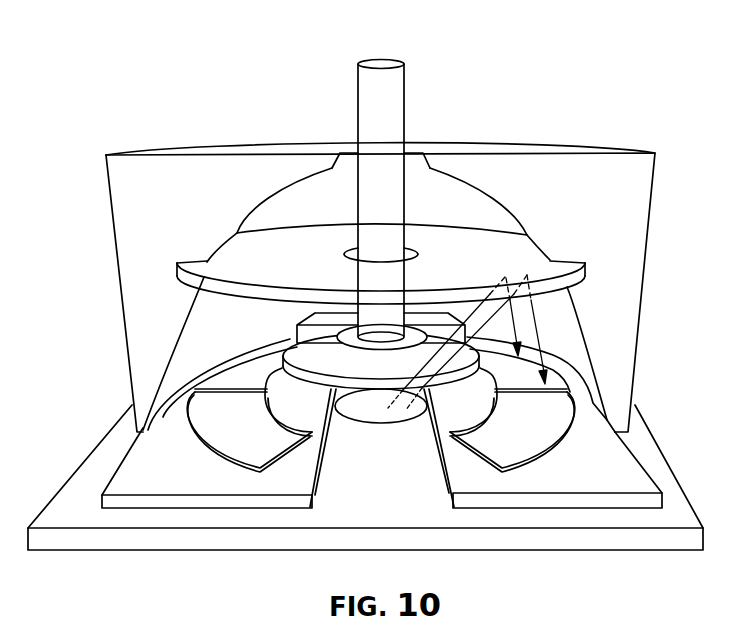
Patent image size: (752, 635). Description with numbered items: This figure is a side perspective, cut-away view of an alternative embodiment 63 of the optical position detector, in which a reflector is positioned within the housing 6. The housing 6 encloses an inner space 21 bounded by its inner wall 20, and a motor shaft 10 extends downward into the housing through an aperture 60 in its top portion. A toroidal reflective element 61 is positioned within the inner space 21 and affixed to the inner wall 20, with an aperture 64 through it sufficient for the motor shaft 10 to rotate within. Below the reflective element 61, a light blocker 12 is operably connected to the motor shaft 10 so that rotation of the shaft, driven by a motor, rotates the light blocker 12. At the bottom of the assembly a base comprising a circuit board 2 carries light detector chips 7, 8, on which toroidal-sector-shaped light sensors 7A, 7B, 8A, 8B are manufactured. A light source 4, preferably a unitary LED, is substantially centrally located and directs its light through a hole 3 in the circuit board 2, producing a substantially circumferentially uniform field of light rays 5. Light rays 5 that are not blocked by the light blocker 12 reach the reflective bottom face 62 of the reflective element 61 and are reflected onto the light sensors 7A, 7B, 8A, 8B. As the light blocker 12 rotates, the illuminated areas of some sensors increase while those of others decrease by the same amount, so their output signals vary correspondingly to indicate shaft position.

The alternative embodiment 63 is at (108, 86).
The circuit board 2 is at (65, 520).
The housing 6 is at (607, 197).
The light detector chip 8 is at (149, 482).
The light detector chip 7 is at (587, 480).
The light sensor 8A is at (238, 452).
The light sensor 8B is at (238, 387).
The light sensor 7A is at (505, 384).
The light sensor 7B is at (491, 449).
The inner space 21 is at (180, 359).
The inner wall 20 is at (284, 192).
The aperture 60 is at (413, 154).
The motor shaft 10 is at (368, 109).
The aperture 64 is at (410, 250).
The toroidal reflective element 61 is at (276, 269).
The bottom face 62 is at (550, 298).
The light blocker 12 is at (294, 323).
The hole 3 is at (336, 407).
The light source 4 is at (372, 419).
The light rays 5 is at (535, 318).